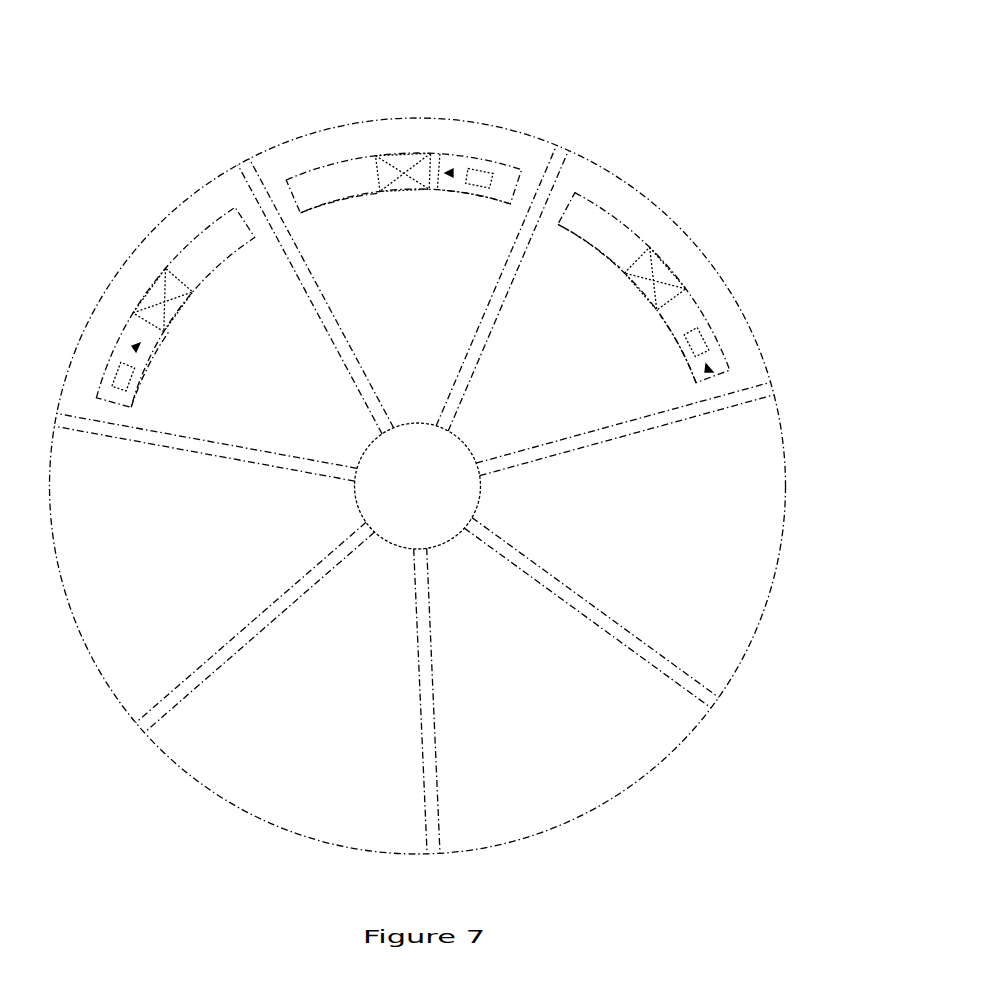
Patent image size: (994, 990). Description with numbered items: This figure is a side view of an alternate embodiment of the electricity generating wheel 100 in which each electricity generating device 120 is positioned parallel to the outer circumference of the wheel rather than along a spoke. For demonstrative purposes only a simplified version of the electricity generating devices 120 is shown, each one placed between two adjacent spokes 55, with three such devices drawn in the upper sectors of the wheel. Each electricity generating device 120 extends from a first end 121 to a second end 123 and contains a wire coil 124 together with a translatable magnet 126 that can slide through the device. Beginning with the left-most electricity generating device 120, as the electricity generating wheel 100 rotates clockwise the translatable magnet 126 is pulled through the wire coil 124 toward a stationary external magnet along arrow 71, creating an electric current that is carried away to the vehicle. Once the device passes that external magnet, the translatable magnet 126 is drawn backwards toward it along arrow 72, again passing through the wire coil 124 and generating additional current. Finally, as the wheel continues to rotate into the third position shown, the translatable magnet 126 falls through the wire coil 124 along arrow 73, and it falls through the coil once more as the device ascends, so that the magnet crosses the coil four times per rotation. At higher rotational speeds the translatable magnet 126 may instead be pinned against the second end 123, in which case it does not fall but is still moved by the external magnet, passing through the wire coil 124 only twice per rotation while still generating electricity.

The electricity generating wheel 100 is at (565, 52).
The spoke 55 is at (348, 344).
The electricity generating device 120 is at (213, 217).
The first end 121 is at (497, 197).
The second end 123 is at (137, 390).
The wire coil 124 is at (155, 287).
The translatable magnet 126 is at (123, 367).
The arrow 71 is at (134, 349).
The arrow 72 is at (452, 173).
The arrow 73 is at (703, 358).